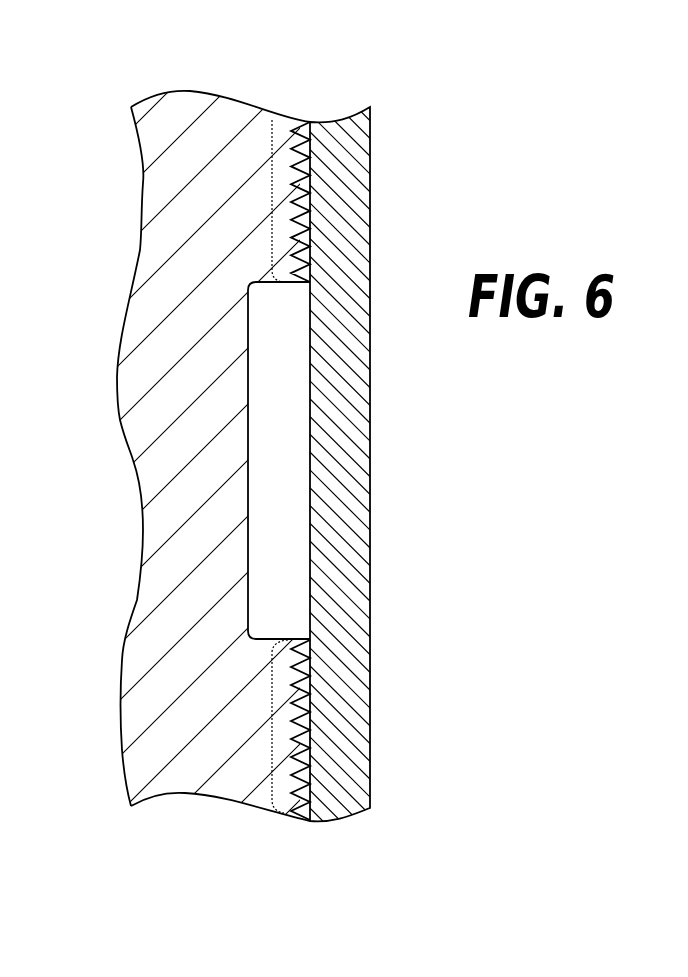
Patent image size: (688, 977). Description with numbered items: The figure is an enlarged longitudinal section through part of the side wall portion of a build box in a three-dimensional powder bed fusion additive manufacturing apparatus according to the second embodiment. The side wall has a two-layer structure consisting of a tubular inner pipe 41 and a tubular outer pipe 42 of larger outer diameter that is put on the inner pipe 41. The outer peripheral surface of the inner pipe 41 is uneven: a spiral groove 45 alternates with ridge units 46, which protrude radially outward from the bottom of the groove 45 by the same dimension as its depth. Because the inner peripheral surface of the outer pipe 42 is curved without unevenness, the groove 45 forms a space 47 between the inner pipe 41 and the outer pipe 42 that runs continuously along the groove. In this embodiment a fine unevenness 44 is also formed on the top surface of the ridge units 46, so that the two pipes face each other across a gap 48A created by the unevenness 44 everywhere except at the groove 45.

The inner pipe 41 is at (181, 107).
The outer pipe 42 is at (352, 128).
The fine unevenness 44 is at (272, 197).
The groove 45 is at (248, 387).
The ridge units 46 is at (268, 122).
The space 47 is at (290, 484).
The gap 48A is at (310, 101).